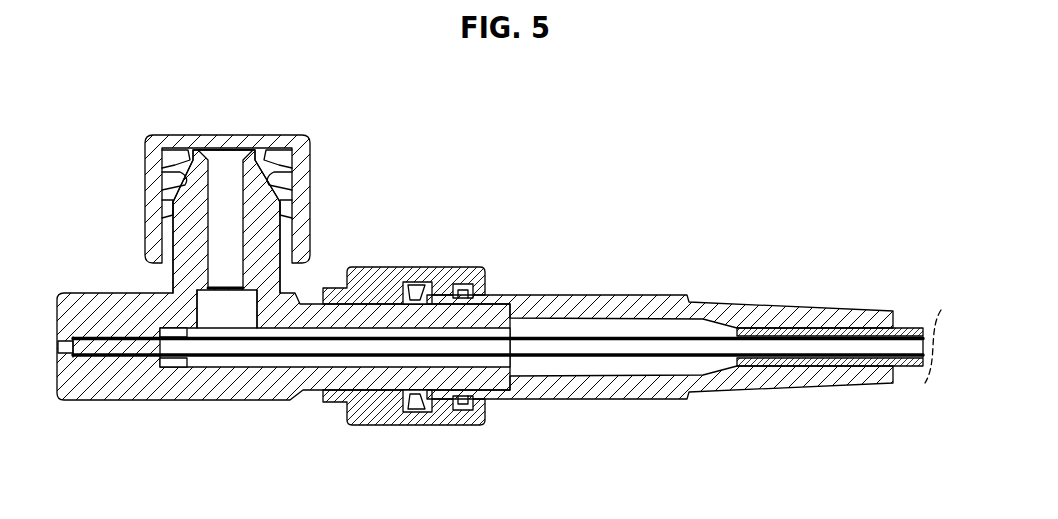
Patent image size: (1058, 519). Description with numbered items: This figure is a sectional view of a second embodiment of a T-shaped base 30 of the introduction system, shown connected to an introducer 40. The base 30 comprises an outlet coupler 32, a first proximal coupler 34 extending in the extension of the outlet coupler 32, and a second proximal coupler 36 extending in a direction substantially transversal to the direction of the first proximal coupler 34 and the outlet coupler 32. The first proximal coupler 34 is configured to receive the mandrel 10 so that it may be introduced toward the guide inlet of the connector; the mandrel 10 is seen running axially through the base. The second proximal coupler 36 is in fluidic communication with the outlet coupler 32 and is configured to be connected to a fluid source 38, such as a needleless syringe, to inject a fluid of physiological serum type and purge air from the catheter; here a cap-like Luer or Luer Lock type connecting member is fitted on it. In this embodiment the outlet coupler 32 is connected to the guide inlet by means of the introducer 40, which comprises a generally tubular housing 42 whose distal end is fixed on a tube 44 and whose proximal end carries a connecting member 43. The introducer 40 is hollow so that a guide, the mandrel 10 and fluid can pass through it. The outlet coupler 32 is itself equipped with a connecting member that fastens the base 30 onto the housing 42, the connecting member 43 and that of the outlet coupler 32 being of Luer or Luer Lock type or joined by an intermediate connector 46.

The mandrel 10 is at (596, 345).
The base 30 is at (283, 294).
The outlet coupler 32 is at (413, 356).
The first proximal coupler 34 is at (82, 383).
The second proximal coupler 36 is at (272, 244).
The fluid source 38 is at (300, 173).
The introducer 40 is at (684, 292).
The housing 42 is at (705, 310).
The connecting member 43 is at (440, 300).
The tube 44 is at (916, 327).
The intermediate connector 46 is at (478, 420).